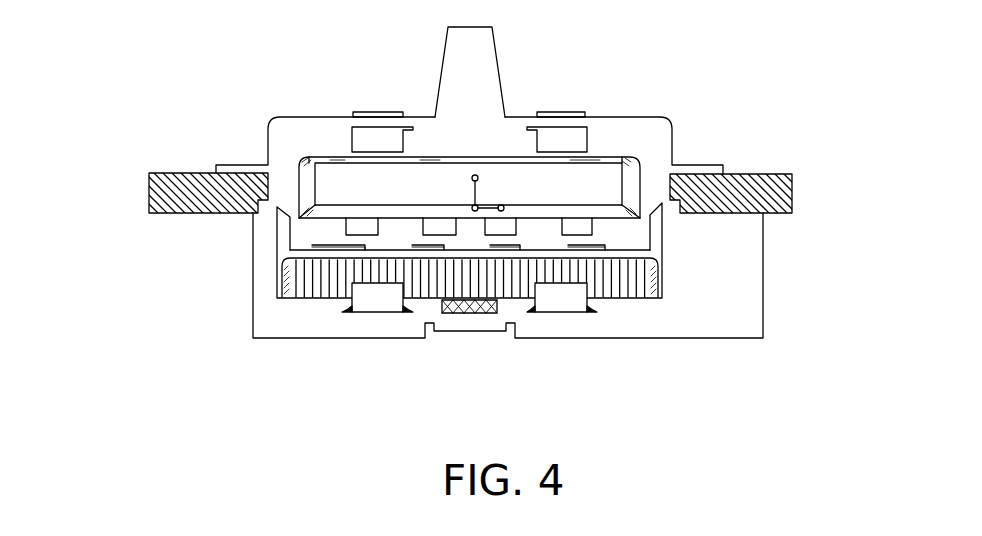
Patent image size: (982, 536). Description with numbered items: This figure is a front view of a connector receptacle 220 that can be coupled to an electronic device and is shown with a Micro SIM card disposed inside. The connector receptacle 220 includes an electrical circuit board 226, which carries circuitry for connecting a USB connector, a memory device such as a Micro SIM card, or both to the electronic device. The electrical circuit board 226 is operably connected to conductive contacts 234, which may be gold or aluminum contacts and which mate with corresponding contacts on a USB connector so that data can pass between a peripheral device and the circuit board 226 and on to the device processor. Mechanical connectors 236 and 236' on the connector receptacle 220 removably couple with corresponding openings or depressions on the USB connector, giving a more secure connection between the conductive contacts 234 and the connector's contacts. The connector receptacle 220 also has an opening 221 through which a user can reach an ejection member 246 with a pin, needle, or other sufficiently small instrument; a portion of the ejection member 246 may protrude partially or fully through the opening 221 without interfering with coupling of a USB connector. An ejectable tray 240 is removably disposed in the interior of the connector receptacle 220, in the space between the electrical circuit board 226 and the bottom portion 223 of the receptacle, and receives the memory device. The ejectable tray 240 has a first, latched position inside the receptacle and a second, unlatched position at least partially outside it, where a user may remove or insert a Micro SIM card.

The connector receptacle 220 is at (297, 45).
The opening 221 is at (458, 313).
The bottom portion 223 is at (284, 353).
The electrical circuit board 226 is at (748, 188).
The conductive contacts 234 is at (360, 227).
The mechanical connectors 236 is at (488, 355).
The mechanical connectors 236' is at (479, 88).
The ejectable tray 240 is at (628, 273).
The ejection member 246 is at (477, 300).